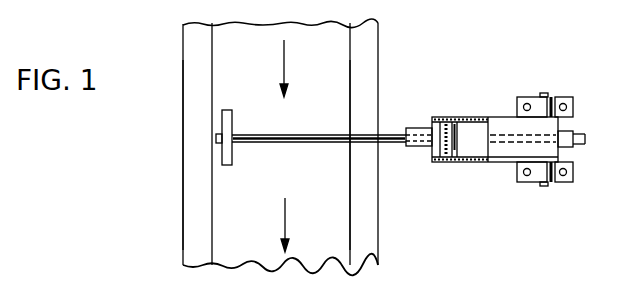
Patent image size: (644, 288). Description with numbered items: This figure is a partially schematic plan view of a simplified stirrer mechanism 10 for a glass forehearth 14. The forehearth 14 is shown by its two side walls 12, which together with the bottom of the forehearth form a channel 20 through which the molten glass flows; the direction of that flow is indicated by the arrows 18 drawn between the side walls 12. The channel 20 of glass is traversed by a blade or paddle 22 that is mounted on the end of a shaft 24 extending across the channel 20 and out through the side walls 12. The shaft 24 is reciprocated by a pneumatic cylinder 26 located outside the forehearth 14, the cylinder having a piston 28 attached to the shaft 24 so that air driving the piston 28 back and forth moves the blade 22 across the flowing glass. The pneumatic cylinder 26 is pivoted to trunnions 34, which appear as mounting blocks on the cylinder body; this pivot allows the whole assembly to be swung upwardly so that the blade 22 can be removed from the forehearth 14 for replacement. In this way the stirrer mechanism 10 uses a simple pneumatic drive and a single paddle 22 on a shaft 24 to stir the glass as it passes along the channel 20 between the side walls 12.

The stirrer mechanism 10 is at (497, 120).
The side walls 12 is at (373, 68).
The forehearth 14 is at (183, 150).
The arrows 18 is at (284, 62).
The channel 20 is at (343, 232).
The blade or paddle 22 is at (232, 151).
The shaft 24 is at (323, 143).
The pneumatic cylinder 26 is at (502, 148).
The piston 28 is at (464, 120).
The trunnions 34 is at (548, 172).